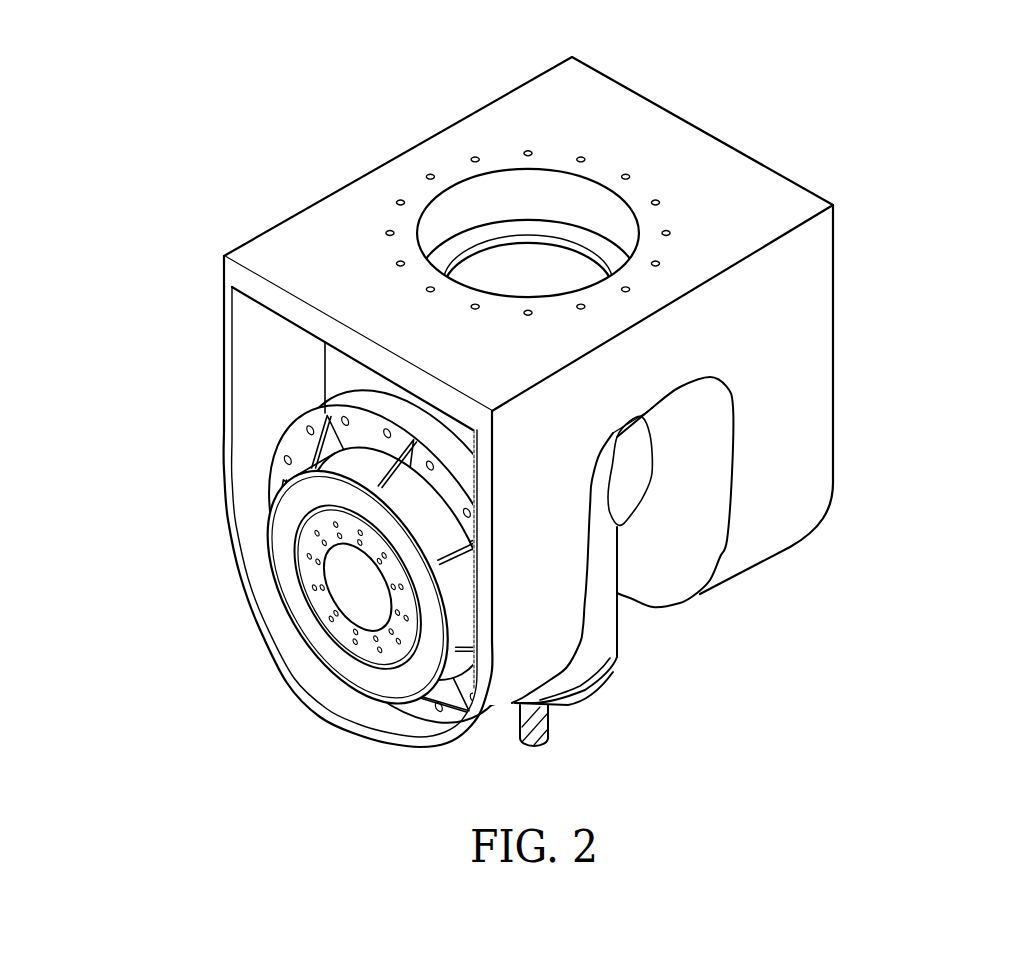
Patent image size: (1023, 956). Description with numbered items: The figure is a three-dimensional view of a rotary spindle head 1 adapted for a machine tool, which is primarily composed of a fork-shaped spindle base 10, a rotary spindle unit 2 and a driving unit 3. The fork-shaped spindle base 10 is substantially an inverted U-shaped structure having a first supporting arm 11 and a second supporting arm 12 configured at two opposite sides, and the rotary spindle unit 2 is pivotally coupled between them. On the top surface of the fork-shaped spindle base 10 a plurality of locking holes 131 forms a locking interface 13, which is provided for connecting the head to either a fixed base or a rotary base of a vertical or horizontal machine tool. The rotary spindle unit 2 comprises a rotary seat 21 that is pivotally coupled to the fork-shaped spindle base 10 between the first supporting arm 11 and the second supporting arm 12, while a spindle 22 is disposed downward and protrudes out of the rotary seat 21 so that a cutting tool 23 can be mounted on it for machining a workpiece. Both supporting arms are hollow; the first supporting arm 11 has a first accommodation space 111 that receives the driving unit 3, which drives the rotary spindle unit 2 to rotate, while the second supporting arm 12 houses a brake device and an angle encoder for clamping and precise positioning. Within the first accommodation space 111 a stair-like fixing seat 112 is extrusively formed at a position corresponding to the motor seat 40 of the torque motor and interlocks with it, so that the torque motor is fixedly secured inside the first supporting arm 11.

The rotary locking device 1 is at (526, 423).
The fork-shaped spindle base 10 is at (526, 377).
The first supporting arm 11 is at (455, 683).
The second supporting arm 12 is at (797, 510).
The locking interface 13 is at (522, 218).
The first accommodation space 111 is at (267, 333).
The stair-like fixing seat 112 is at (445, 427).
The mounting holes 131 is at (583, 158).
The rotary spindle unit 2 is at (628, 608).
The rotary seat 21 is at (608, 575).
The spindle 22 is at (563, 698).
The cutting tool 23 is at (519, 735).
The driving unit 3 is at (329, 571).
The motor seat 40 is at (480, 487).